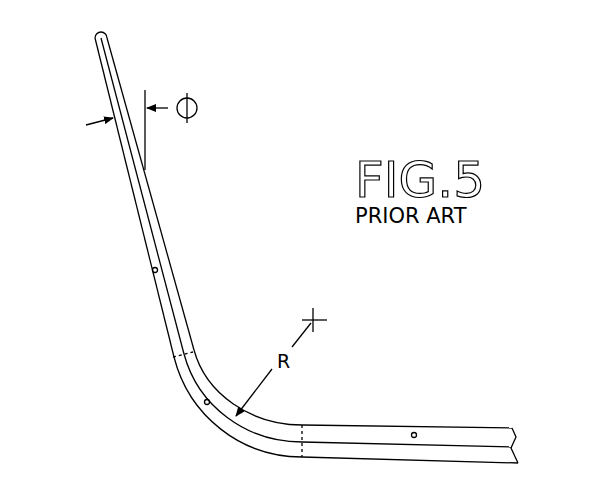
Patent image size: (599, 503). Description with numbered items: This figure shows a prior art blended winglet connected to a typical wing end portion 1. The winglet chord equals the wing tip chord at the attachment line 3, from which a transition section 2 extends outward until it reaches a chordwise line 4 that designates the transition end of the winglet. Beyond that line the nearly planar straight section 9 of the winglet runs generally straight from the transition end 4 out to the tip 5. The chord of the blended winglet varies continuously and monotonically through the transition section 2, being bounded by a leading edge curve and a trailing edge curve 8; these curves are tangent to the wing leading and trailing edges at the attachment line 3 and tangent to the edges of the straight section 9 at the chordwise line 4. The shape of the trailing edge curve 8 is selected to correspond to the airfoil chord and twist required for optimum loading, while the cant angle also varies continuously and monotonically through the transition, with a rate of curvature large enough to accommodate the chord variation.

The wing end portion 1 is at (417, 432).
The transition section 2 is at (203, 405).
The attachment line 3 is at (289, 458).
The chordwise line 4 is at (161, 363).
The tip 5 is at (99, 36).
The trailing edge curve 8 is at (277, 437).
The straight section of the winglet 9 is at (153, 272).